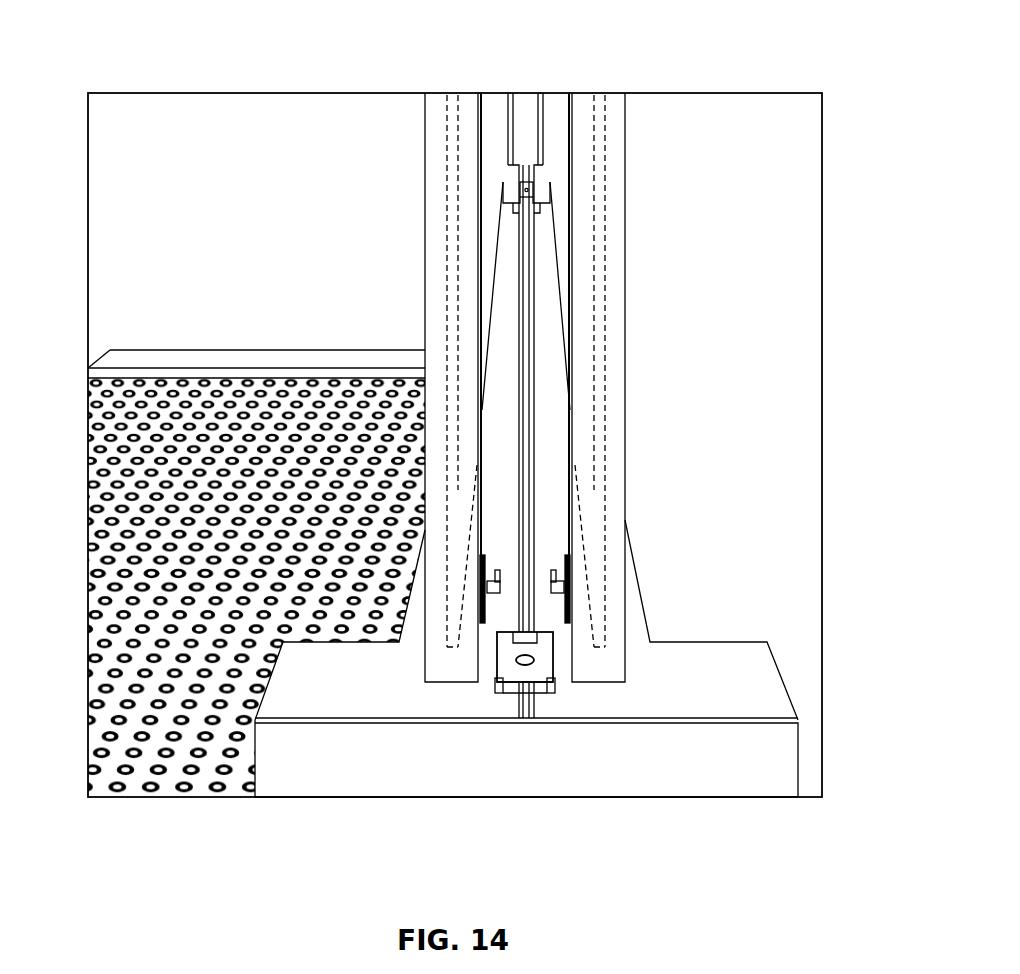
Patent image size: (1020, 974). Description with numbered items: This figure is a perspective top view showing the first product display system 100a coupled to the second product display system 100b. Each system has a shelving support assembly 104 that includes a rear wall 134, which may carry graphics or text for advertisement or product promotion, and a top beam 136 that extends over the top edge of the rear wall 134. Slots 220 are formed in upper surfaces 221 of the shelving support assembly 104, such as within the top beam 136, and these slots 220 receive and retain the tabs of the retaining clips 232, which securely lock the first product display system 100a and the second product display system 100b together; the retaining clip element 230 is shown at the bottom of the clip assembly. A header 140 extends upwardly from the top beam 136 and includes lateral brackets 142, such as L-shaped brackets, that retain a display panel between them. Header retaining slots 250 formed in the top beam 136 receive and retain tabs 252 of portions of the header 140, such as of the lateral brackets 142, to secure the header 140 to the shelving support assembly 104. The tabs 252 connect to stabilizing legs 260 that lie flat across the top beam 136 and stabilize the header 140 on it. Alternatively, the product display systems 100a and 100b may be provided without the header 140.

The first product display system 100a is at (277, 823).
The second product display system 100b is at (776, 825).
The shelving support assembly 104 is at (357, 823).
The rear wall 134 is at (405, 773).
The top beam 136 is at (750, 688).
The header 140 is at (453, 107).
The lateral brackets 142 is at (437, 106).
The slots 220 is at (500, 688).
The upper surfaces 221 is at (503, 704).
The bracket base 230 is at (496, 686).
The retaining clips 232 is at (530, 638).
The header retaining slots 250 is at (501, 573).
The tabs 252 is at (501, 586).
The stabilizing legs 260 is at (489, 571).